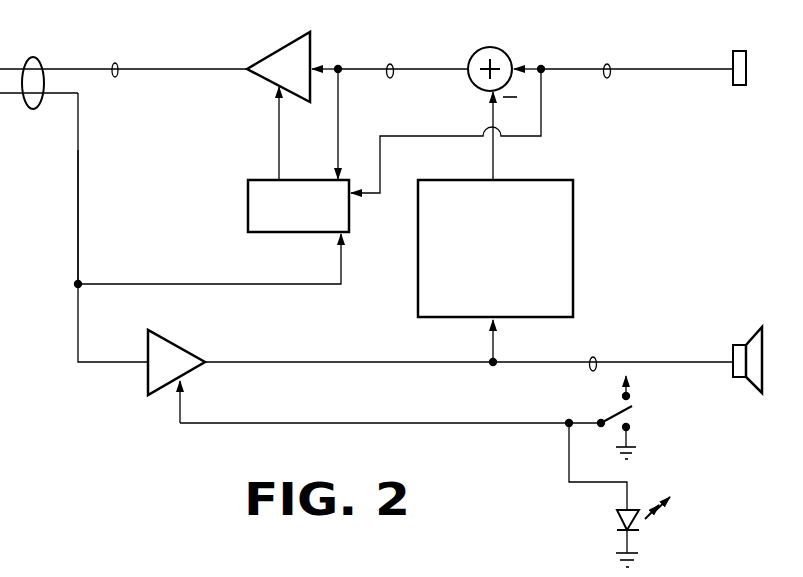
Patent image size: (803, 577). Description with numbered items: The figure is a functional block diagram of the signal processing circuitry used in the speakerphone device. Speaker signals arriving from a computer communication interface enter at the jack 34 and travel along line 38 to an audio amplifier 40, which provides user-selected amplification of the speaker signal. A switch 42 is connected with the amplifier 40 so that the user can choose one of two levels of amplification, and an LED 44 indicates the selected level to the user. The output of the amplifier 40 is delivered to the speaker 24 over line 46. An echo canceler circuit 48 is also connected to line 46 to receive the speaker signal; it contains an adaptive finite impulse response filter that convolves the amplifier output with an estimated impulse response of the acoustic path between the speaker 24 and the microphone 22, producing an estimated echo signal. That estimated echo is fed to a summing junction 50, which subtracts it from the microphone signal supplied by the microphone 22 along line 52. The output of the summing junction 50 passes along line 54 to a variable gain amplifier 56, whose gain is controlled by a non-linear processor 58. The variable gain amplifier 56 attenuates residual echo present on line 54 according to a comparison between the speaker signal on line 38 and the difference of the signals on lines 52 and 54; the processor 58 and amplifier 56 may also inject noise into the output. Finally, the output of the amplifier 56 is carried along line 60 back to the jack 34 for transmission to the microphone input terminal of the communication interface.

The microphone 22 is at (740, 51).
The speaker 24 is at (752, 337).
The jack 34 is at (33, 57).
The line 38 is at (74, 228).
The audio amplifier 40 is at (170, 343).
The switch 42 is at (640, 410).
The LED 44 is at (621, 512).
The line 46 is at (594, 357).
The echo canceler circuit 48 is at (573, 213).
The summing junction 50 is at (496, 48).
The line 52 is at (608, 64).
The line 54 is at (391, 64).
The variable gain amplifier 56 is at (277, 50).
The non-linear processor 58 is at (248, 192).
The line 60 is at (116, 63).